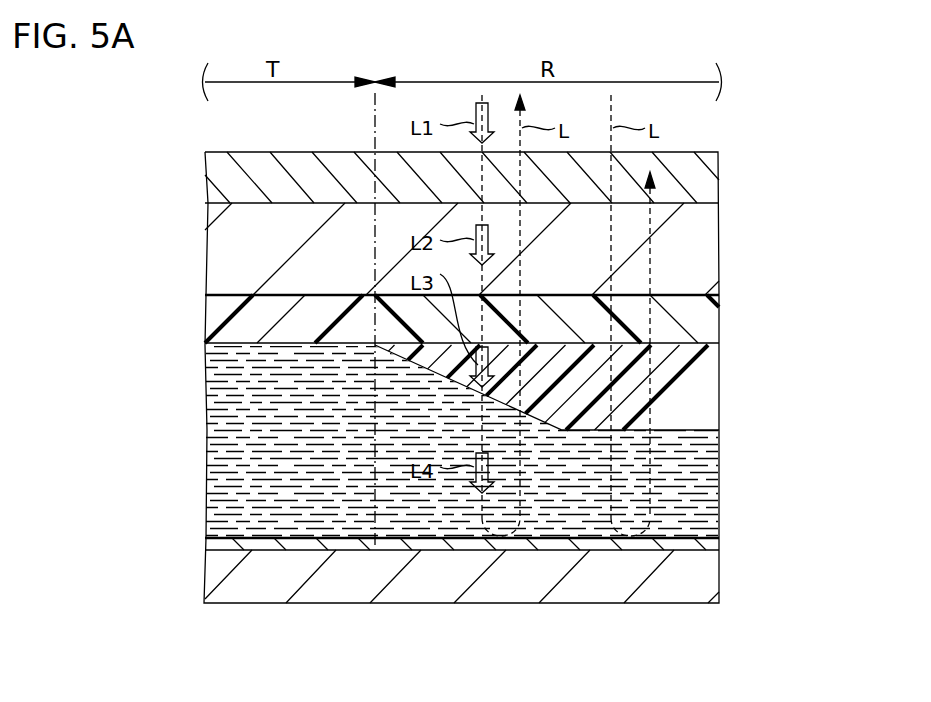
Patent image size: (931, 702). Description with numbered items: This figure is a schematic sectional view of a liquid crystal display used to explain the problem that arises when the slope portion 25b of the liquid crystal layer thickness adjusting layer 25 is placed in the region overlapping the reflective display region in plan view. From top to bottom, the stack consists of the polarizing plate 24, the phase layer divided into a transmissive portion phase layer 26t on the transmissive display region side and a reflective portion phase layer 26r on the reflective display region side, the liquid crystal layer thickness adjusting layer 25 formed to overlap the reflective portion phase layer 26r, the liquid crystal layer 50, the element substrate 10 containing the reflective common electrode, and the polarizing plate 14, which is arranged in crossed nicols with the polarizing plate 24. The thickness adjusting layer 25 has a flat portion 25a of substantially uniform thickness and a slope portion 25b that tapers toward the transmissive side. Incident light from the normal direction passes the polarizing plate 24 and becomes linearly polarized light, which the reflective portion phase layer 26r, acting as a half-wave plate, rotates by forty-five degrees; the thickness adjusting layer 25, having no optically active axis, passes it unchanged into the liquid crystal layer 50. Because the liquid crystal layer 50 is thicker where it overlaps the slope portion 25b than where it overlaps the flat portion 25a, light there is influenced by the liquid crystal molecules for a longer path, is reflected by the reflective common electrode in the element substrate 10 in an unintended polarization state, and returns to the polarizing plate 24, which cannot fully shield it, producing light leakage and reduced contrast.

The element substrate 10 is at (688, 616).
The polarizing plate 14 is at (712, 590).
The polarizing plate 24 is at (712, 159).
The liquid crystal layer thickness adjusting layer 25 is at (606, 387).
The flat portion 25a is at (715, 375).
The slope portion 25b is at (535, 393).
The transmissive portion phase layer 26t is at (215, 322).
The reflective portion phase layer 26r is at (712, 318).
The liquid crystal layer 50 is at (712, 492).